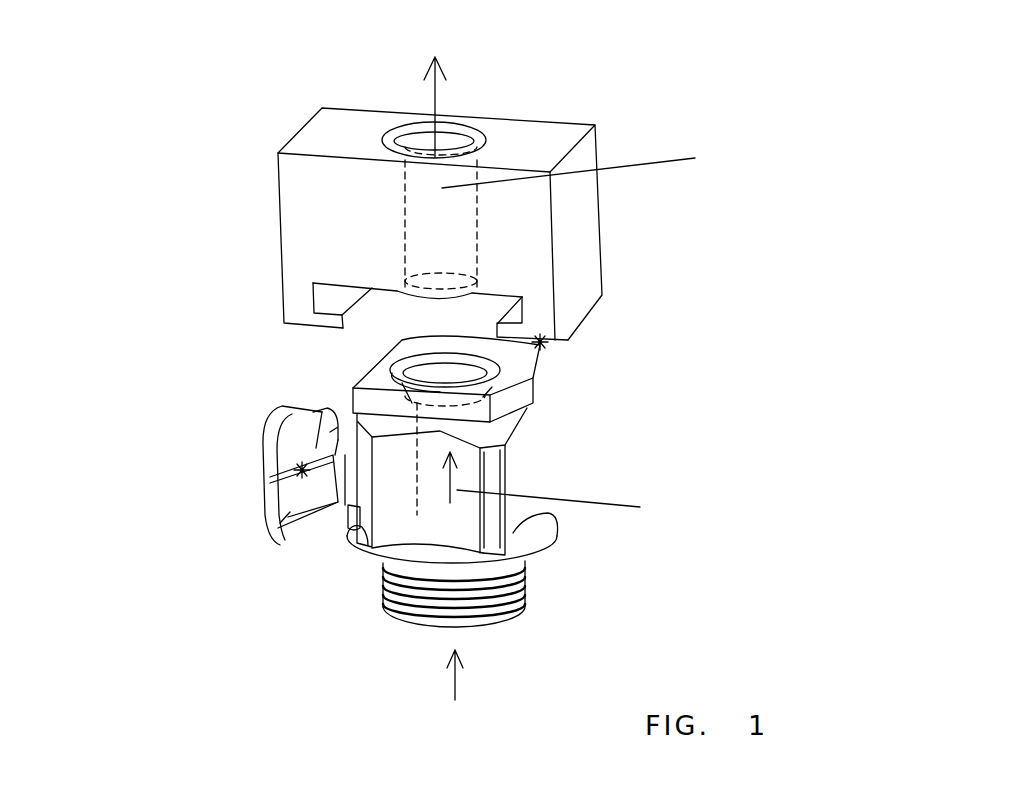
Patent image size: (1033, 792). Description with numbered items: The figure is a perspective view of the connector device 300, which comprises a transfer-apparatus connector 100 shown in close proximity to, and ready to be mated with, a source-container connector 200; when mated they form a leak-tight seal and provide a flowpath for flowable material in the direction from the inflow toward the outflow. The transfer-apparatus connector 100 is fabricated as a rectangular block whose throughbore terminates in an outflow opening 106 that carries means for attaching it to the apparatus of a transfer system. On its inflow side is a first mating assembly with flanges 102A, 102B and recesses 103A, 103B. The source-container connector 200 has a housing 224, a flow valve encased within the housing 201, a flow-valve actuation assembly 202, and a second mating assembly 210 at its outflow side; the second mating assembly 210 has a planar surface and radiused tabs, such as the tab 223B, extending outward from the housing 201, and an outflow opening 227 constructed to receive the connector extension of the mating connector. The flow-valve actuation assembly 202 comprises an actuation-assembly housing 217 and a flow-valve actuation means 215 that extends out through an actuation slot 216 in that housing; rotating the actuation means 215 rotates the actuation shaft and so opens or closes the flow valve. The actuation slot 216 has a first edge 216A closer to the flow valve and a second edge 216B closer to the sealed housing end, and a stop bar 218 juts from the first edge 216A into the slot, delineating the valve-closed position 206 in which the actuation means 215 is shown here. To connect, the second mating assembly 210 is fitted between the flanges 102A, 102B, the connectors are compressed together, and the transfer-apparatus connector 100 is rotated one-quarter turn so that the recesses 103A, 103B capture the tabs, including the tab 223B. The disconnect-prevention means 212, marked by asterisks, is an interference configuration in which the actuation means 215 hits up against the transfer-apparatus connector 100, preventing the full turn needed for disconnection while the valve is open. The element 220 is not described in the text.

The connector device 300 is at (603, 18).
The transfer-apparatus connector 100 is at (343, 142).
The outflow opening 106 is at (447, 140).
The recess 103B is at (347, 302).
The flange 102B is at (325, 320).
The recess 103A is at (498, 336).
The flange 102A is at (512, 335).
The disconnect-prevention means 212 is at (540, 342).
The source-container connector 200 is at (530, 537).
The flange plate 220 is at (390, 369).
The outflow opening 227 is at (443, 382).
The second mating assembly 210 is at (458, 422).
The tab 223B is at (500, 438).
The housing 224 is at (473, 532).
The housing 201 is at (525, 573).
The flow-valve actuation assembly 202 is at (224, 514).
The actuation-assembly housing 217 is at (290, 429).
The second edge 216B is at (330, 418).
The actuation slot 216 is at (315, 447).
The stop bar 218 is at (312, 447).
The flow-valve actuation means 215 is at (333, 510).
The valve-closed position 206 is at (343, 510).
The first edge 216A is at (345, 505).